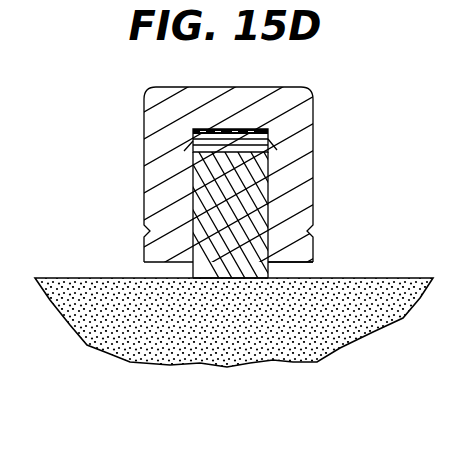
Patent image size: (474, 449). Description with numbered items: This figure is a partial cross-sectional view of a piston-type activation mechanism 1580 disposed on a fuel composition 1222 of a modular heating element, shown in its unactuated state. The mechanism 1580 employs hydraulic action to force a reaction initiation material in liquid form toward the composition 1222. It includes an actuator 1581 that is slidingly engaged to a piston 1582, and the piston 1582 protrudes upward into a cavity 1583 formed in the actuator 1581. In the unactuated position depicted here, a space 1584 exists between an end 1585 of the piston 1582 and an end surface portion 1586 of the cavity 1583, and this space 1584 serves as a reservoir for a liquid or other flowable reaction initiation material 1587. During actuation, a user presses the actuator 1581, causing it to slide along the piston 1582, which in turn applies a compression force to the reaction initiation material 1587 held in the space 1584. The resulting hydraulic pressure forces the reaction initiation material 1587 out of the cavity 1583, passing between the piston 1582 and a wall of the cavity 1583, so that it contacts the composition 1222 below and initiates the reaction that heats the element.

The piston-type activation mechanism 1580 is at (245, 198).
The actuator 1581 is at (313, 113).
The piston 1582 is at (268, 268).
The cavity 1583 is at (192, 150).
The space 1584 is at (275, 109).
The end of the piston 1585 is at (264, 144).
The end surface portion of the cavity 1586 is at (258, 128).
The reaction initiation material 1587 is at (233, 128).
The composition 1222 is at (133, 325).